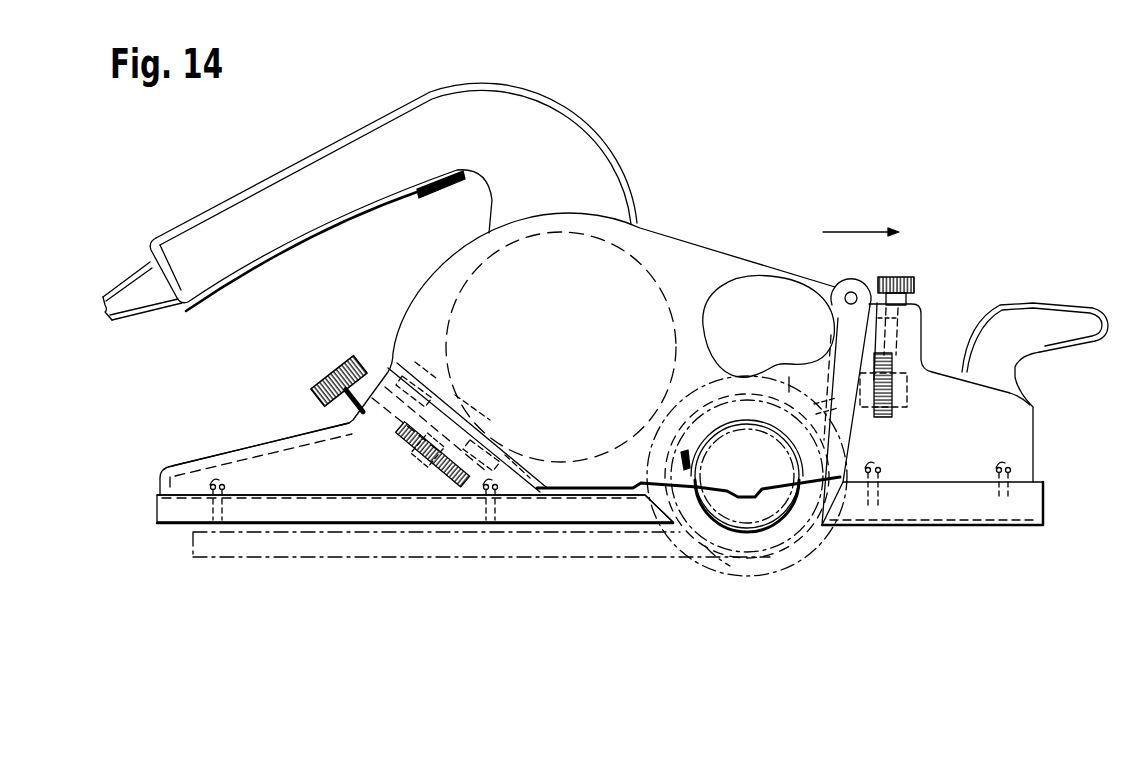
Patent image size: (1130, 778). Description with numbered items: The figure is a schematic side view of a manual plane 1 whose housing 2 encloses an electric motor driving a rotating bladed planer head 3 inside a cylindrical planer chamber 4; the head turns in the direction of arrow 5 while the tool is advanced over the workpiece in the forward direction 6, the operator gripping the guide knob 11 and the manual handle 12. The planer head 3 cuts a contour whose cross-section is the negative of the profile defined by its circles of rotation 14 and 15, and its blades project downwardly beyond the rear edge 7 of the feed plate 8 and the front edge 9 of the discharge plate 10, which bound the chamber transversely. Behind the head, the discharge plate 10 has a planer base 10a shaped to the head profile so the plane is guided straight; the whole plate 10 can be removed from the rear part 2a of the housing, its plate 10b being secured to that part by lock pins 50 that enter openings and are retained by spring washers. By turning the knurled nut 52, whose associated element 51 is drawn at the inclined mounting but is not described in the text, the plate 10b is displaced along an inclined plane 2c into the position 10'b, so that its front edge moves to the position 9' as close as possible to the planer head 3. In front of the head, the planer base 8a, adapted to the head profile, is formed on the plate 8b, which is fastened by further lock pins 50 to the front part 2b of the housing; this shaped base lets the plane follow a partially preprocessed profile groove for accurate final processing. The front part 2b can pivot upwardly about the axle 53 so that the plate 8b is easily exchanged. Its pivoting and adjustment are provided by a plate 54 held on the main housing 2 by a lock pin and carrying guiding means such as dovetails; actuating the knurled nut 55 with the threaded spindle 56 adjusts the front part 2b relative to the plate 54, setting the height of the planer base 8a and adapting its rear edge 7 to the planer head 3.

The manual plane 1 is at (603, 146).
The manual handle 12 is at (247, 178).
The housing 2 is at (672, 240).
The rear part of the housing 2a is at (278, 467).
The front part of the housing 2b is at (1022, 413).
The inclined plane 2c is at (430, 405).
The bladed planer head 3 is at (790, 520).
The cylindrical planer chamber 4 is at (683, 412).
The direction of rotation arrow 5 is at (690, 444).
The forward direction of advance 6 is at (840, 231).
The rear edge of the feed plate 7 is at (818, 527).
The feed plate 8 is at (975, 537).
The planer base of the feed plate 8a is at (940, 527).
The plate of the feed table 8b is at (857, 515).
The front edge of the discharge plate 9 is at (660, 552).
The displaced position of the front edge 9' is at (711, 575).
The discharge plate 10 is at (415, 552).
The planer base of the discharge plate 10a is at (440, 523).
The plate secured to the rear housing part 10b is at (303, 515).
The displaced position of the plate 10'b is at (481, 571).
The guide knob 11 is at (1023, 320).
The circle of rotation 14 is at (722, 545).
The circle of rotation 15 is at (760, 528).
The lock pins 50 is at (212, 484).
The adjusting spindle 51 is at (222, 485).
The knurled nut 52 is at (340, 376).
The axle 53 is at (853, 292).
The plate 54 is at (846, 350).
The knurled nut 55 is at (914, 284).
The threaded spindle 56 is at (893, 375).